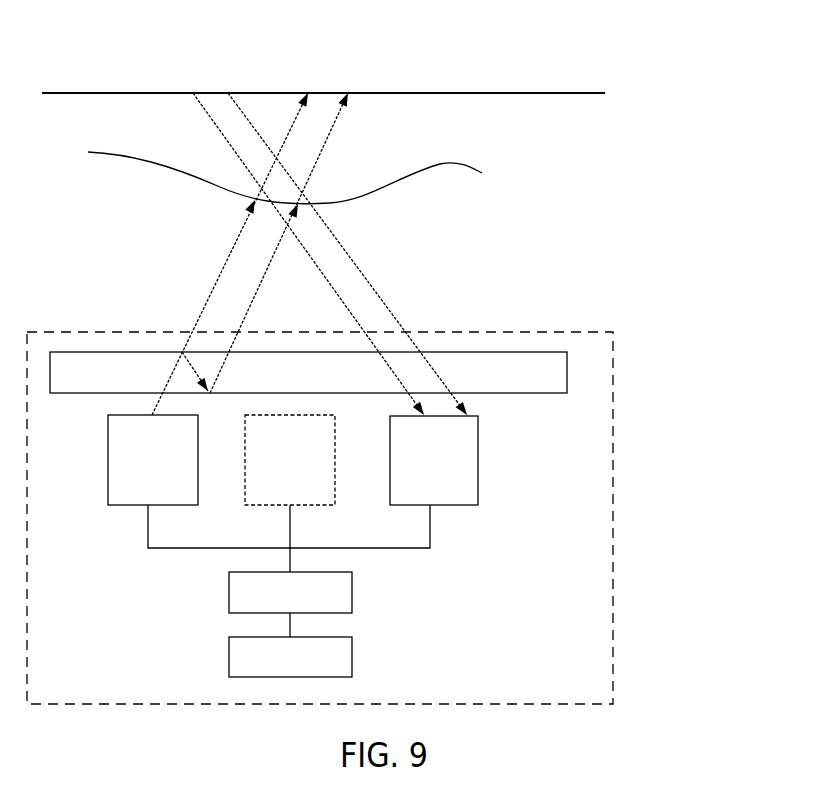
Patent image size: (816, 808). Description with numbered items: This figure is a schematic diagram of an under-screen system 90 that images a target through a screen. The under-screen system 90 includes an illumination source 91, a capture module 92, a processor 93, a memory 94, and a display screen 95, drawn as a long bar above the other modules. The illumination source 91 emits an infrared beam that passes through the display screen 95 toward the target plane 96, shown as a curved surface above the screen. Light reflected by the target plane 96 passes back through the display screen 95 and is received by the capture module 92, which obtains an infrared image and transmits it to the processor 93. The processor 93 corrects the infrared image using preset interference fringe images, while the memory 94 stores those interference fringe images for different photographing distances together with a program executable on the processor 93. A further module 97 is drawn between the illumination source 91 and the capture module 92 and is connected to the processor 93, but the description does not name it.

The under-screen system 90 is at (613, 480).
The illumination source 91 is at (153, 460).
The capture module 92 is at (434, 460).
The processor 93 is at (352, 590).
The memory 94 is at (352, 650).
The display screen 95 is at (567, 372).
The target plane 96 is at (311, 178).
The auxiliary sensor 97 is at (290, 460).